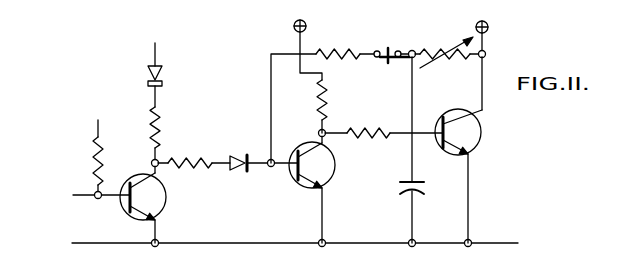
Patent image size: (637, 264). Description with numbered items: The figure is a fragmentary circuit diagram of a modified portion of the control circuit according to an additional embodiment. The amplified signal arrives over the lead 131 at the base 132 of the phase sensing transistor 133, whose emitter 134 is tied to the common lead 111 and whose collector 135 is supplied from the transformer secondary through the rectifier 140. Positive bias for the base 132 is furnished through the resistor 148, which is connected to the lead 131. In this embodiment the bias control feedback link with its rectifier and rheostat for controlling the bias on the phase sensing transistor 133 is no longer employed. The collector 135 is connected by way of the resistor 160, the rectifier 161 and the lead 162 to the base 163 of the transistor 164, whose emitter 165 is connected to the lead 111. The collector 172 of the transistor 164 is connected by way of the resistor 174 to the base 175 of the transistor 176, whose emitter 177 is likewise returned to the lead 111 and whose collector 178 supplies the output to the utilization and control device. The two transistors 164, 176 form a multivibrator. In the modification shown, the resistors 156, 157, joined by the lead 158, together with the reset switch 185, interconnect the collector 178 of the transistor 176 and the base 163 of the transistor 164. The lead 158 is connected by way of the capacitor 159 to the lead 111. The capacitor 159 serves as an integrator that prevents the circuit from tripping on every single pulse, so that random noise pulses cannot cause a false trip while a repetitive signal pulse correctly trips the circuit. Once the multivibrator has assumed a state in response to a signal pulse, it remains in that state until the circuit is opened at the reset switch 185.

The lead 111 is at (497, 242).
The lead 131 is at (95, 200).
The base 132 is at (147, 197).
The transistor 133 is at (134, 218).
The emitter 134 is at (157, 226).
The collector 135 is at (162, 192).
The rectifier 140 is at (163, 79).
The resistor 148 is at (92, 150).
The resistor 156 is at (343, 48).
The resistor 157 is at (445, 48).
The lead 158 is at (412, 50).
The capacitor 159 is at (418, 196).
The resistor 160 is at (198, 158).
The rectifier 161 is at (245, 172).
The lead 162 is at (268, 92).
The base 163 is at (296, 172).
The transistor 164 is at (336, 172).
The emitter 165 is at (305, 188).
The collector 172 is at (315, 184).
The resistor 174 is at (374, 140).
The base 175 is at (469, 150).
The transistor 176 is at (481, 143).
The emitter 177 is at (455, 150).
The collector 178 is at (479, 118).
The reset switch 185 is at (385, 62).